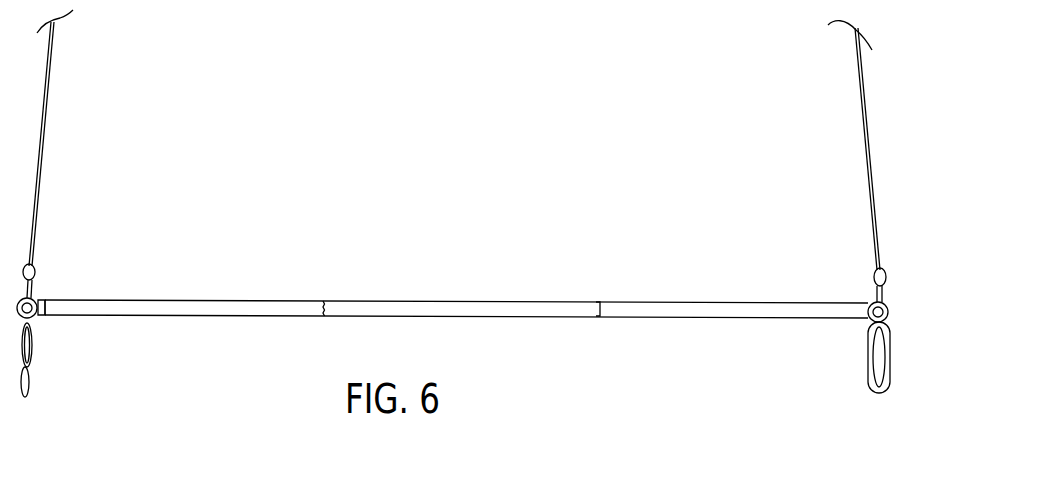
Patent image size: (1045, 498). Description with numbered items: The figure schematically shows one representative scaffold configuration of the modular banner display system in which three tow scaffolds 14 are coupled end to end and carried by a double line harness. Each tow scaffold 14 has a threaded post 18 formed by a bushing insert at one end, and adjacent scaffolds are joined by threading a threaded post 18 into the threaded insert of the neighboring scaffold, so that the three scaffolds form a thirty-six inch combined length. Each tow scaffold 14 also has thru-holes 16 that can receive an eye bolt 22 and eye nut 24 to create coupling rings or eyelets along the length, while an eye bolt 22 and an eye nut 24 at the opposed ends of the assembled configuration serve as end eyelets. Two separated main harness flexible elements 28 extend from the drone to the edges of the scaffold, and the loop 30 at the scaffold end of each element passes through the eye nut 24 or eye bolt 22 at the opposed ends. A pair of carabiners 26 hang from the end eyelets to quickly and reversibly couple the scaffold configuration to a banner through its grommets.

The tow scaffold 14 is at (150, 300).
The thru-hole 16 is at (230, 316).
The threaded post 18 is at (43, 300).
The eye bolt 22 is at (888, 312).
The eye nut 24 is at (40, 317).
The carabiner 26 is at (30, 383).
The main harness flexible element 28 is at (50, 142).
The loop 30 is at (35, 270).